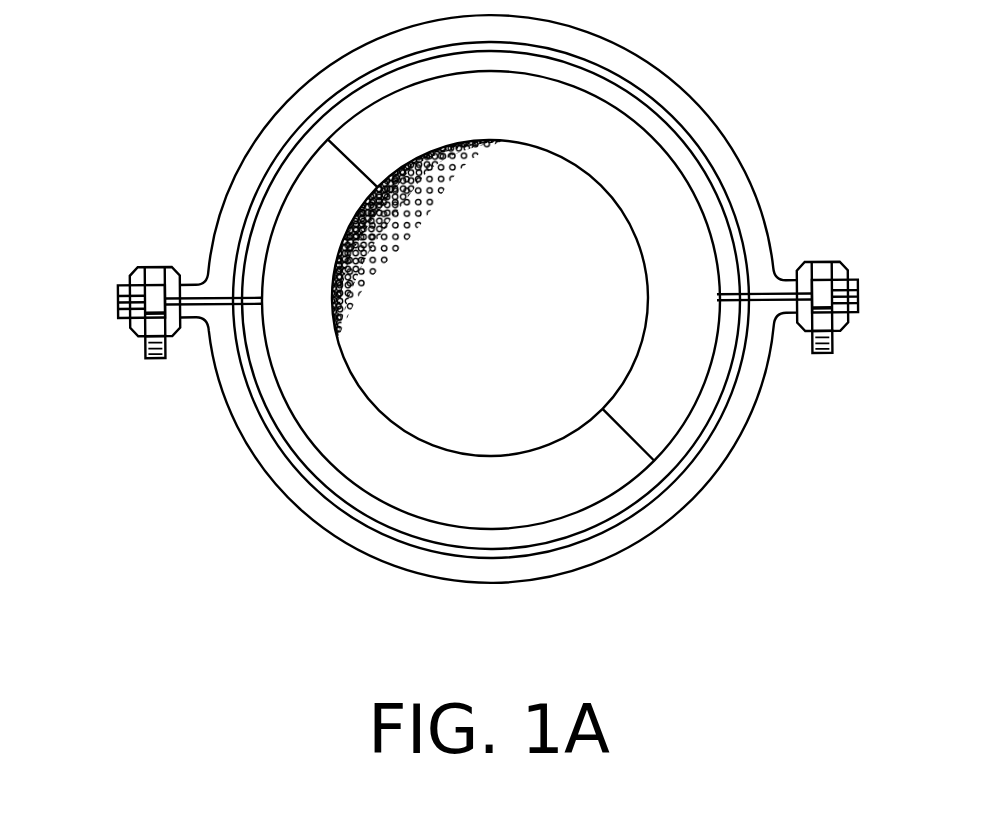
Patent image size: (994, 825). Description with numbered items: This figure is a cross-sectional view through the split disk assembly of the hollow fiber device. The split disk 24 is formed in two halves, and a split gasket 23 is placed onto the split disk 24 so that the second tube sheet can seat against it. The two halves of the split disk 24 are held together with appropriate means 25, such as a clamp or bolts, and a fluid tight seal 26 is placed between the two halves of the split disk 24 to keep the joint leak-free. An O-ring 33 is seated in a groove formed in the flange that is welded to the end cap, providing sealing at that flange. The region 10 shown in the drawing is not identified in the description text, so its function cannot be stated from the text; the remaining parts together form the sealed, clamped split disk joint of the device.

The particulate material 10 is at (415, 220).
The split gasket 23 is at (352, 425).
The split disk 24 is at (258, 437).
The appropriate means 25 is at (815, 265).
The fluid tight seal 26 is at (117, 296).
The O-ring 33 is at (680, 120).